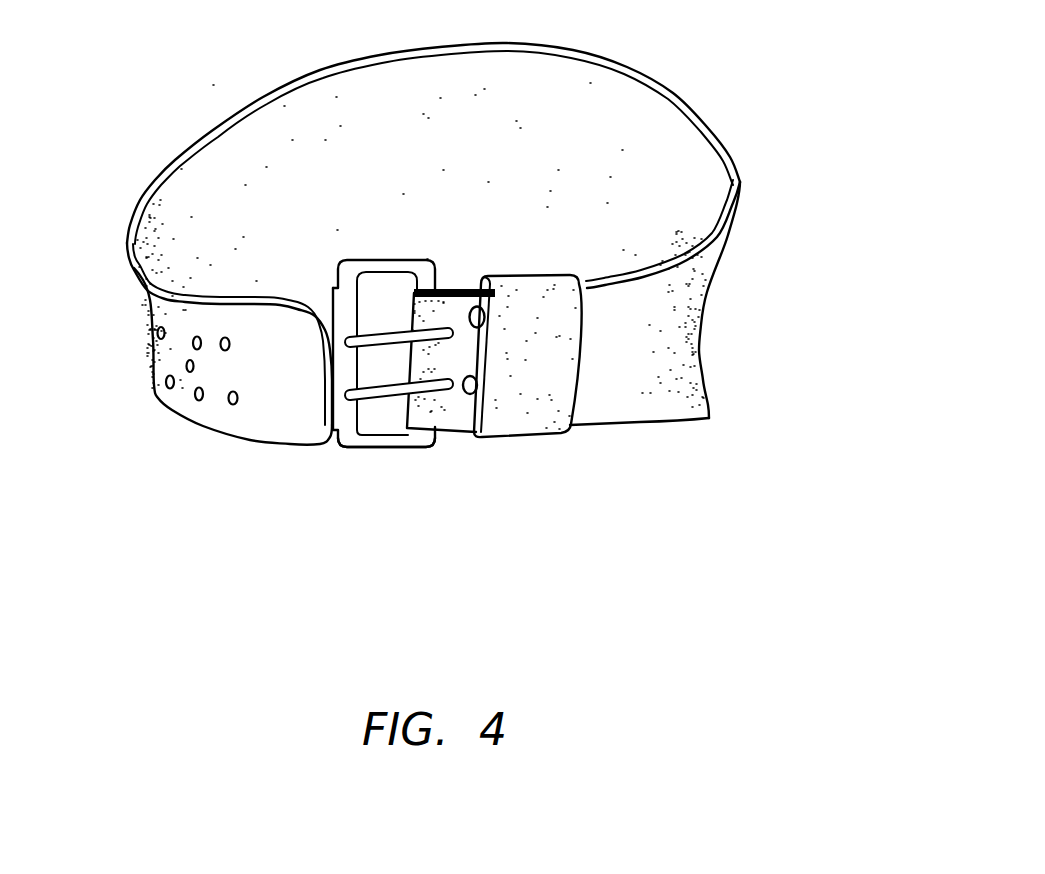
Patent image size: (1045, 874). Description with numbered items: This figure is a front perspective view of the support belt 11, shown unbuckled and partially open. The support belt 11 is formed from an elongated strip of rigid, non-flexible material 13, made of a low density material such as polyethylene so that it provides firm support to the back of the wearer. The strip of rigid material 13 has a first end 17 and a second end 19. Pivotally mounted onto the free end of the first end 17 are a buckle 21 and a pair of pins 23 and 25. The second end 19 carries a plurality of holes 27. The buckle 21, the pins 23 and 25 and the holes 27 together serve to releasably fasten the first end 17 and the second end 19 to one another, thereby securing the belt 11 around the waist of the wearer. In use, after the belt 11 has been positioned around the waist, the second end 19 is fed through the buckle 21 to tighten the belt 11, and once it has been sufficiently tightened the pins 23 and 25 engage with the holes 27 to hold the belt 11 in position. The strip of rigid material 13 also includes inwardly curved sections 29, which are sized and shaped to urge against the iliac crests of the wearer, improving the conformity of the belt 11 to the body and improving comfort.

The support belt 11 is at (148, 502).
The elongated strip of rigid material 13 is at (657, 83).
The first end 17 is at (457, 413).
The second end 19 is at (264, 437).
The buckle 21 is at (394, 440).
The pin 23 is at (371, 421).
The pin 25 is at (366, 334).
The holes 27 is at (196, 336).
The inwardly curved sections 29 is at (699, 312).